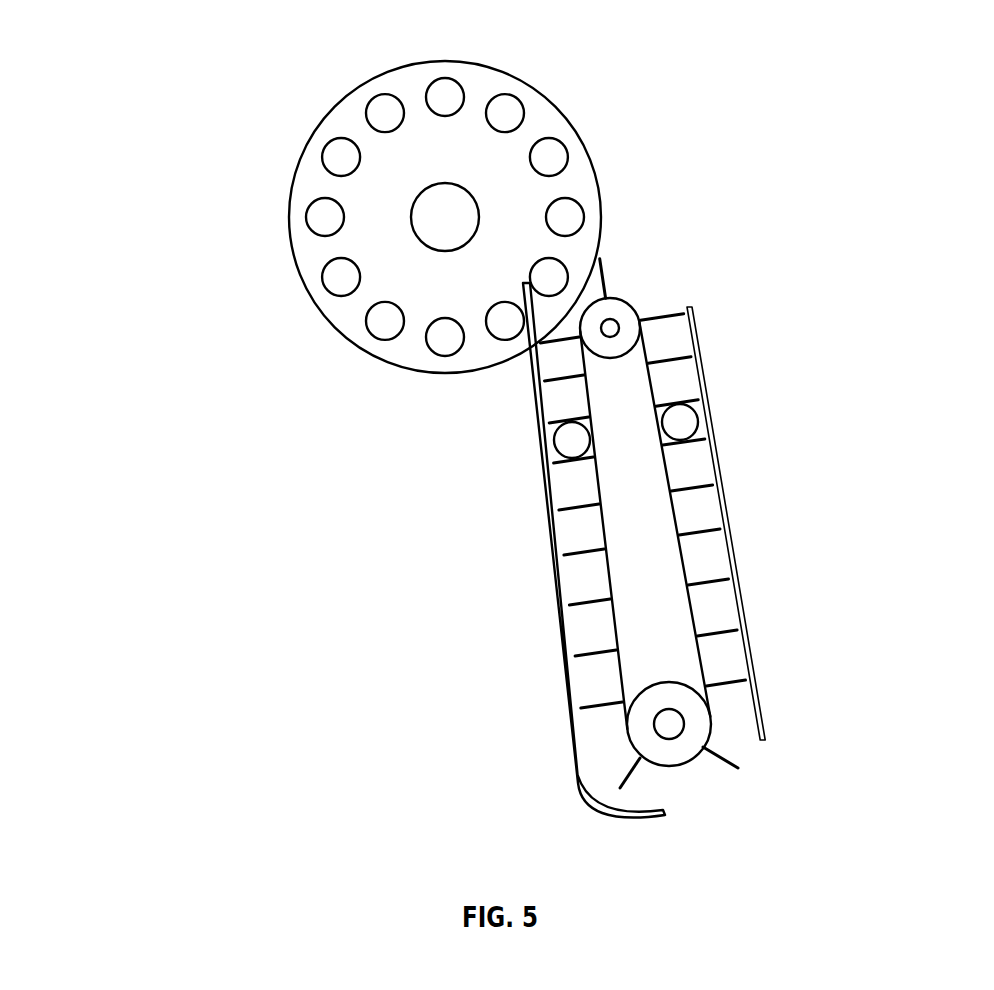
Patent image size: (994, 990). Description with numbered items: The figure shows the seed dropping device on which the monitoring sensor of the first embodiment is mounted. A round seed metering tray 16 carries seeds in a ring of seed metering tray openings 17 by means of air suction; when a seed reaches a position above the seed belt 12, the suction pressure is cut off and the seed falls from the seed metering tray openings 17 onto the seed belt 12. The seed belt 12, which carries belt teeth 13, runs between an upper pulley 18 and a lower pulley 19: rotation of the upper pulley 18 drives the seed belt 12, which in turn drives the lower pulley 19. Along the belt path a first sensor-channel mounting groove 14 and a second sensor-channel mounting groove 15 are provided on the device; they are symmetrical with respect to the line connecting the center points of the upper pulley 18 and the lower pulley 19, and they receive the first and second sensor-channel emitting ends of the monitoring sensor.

The seed belt 12 is at (627, 614).
The belt teeth 13 is at (713, 580).
The first sensor-channel mounting groove 14 is at (563, 447).
The second sensor-channel mounting groove 15 is at (690, 430).
The seed metering tray 16 is at (310, 251).
The seed metering tray openings 17 is at (543, 158).
The upper pulley 18 is at (628, 320).
The lower pulley 19 is at (697, 743).